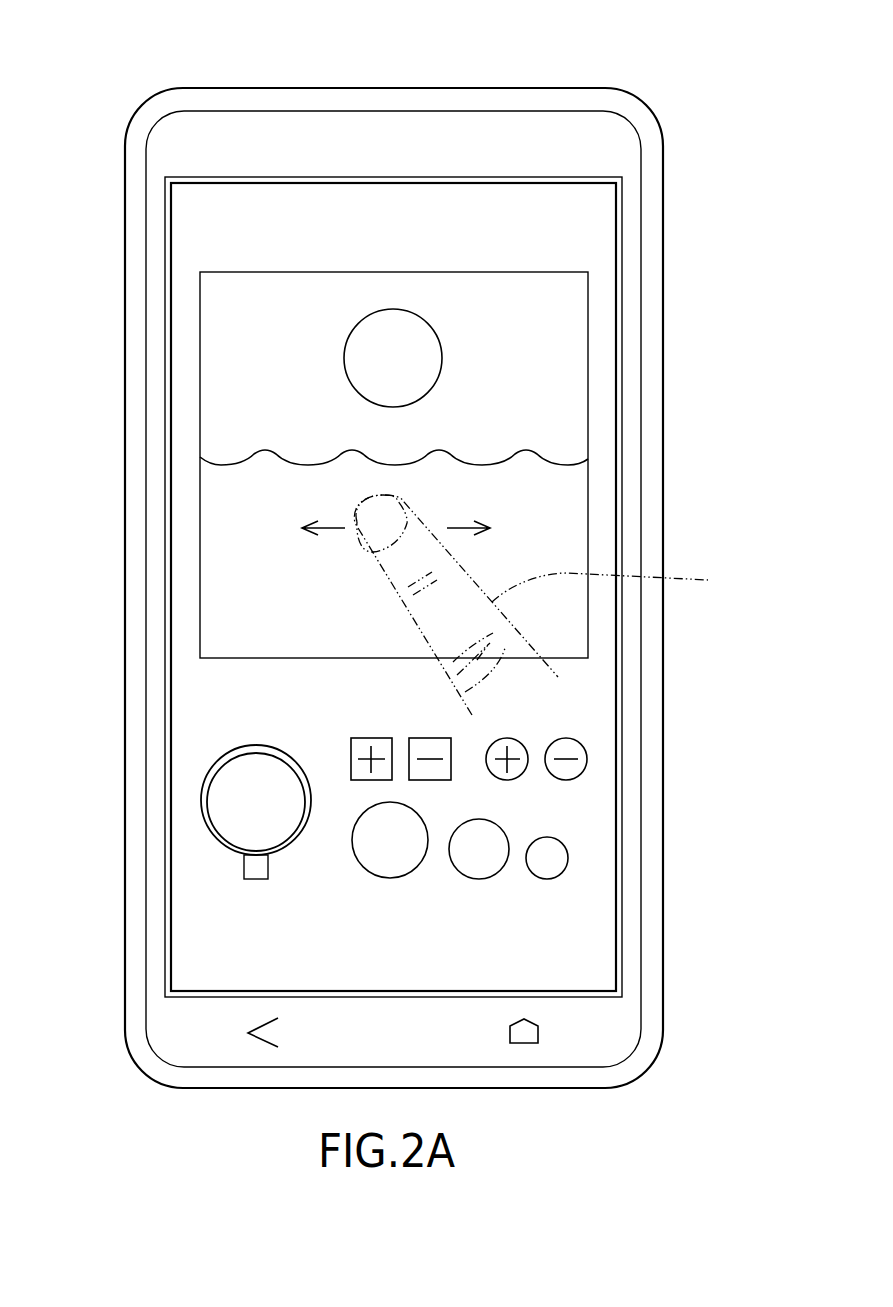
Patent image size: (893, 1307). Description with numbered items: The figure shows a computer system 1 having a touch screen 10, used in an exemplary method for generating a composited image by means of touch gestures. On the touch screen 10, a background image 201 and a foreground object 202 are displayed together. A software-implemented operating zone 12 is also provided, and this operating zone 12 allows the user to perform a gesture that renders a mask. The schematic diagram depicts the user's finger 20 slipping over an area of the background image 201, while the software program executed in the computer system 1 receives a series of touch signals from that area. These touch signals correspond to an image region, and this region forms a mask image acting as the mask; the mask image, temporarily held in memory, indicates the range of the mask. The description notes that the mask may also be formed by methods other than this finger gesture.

The computer system 1 is at (80, 25).
The touch screen 10 is at (525, 208).
The operating zone 12 is at (198, 757).
The finger 20 is at (522, 605).
The background image 201 is at (228, 490).
The foreground object 202 is at (443, 358).